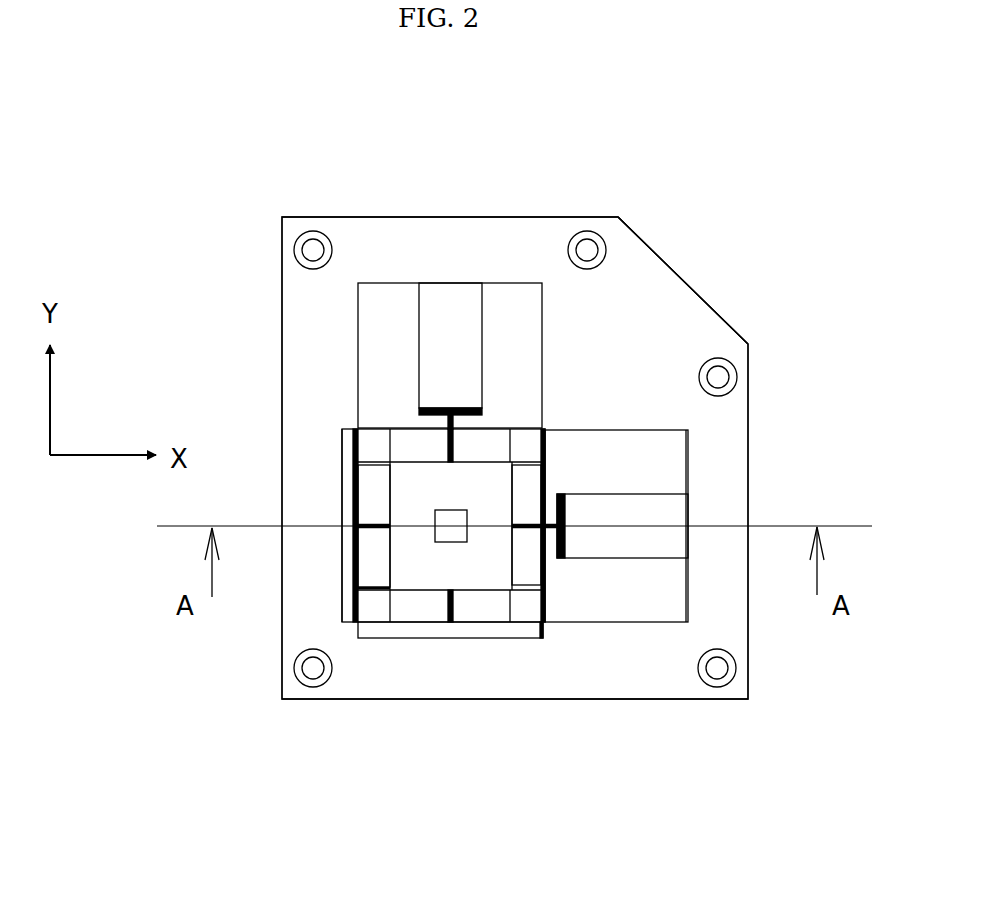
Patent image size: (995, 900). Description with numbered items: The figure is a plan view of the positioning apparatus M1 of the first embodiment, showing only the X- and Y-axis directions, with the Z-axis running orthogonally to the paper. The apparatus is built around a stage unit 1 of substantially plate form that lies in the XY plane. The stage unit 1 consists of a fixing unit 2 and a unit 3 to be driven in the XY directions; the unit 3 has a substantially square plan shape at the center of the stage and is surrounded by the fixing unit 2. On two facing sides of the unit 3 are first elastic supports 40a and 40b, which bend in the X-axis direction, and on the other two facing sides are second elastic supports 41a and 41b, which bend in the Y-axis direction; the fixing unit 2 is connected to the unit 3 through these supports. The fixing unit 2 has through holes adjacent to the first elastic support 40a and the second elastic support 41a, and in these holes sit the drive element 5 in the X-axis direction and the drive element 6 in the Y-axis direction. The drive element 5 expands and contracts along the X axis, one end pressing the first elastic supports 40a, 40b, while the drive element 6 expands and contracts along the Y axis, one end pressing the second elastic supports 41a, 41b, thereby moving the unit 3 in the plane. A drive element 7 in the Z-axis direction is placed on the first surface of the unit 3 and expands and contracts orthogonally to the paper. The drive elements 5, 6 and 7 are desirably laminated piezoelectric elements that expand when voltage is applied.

The stage unit 1 is at (256, 181).
The fixing unit 2 is at (457, 247).
The positioning apparatus M1 is at (650, 224).
The unit to be driven in the XY directions 3 is at (470, 567).
The drive element in the X-axis direction 5 is at (643, 508).
The drive element in the Y-axis direction 6 is at (457, 307).
The drive element in the Z-axis direction 7 is at (455, 540).
The first elastic support 40a is at (543, 570).
The first elastic support 40b is at (357, 563).
The second elastic support 41a is at (455, 430).
The second elastic support 41b is at (402, 623).